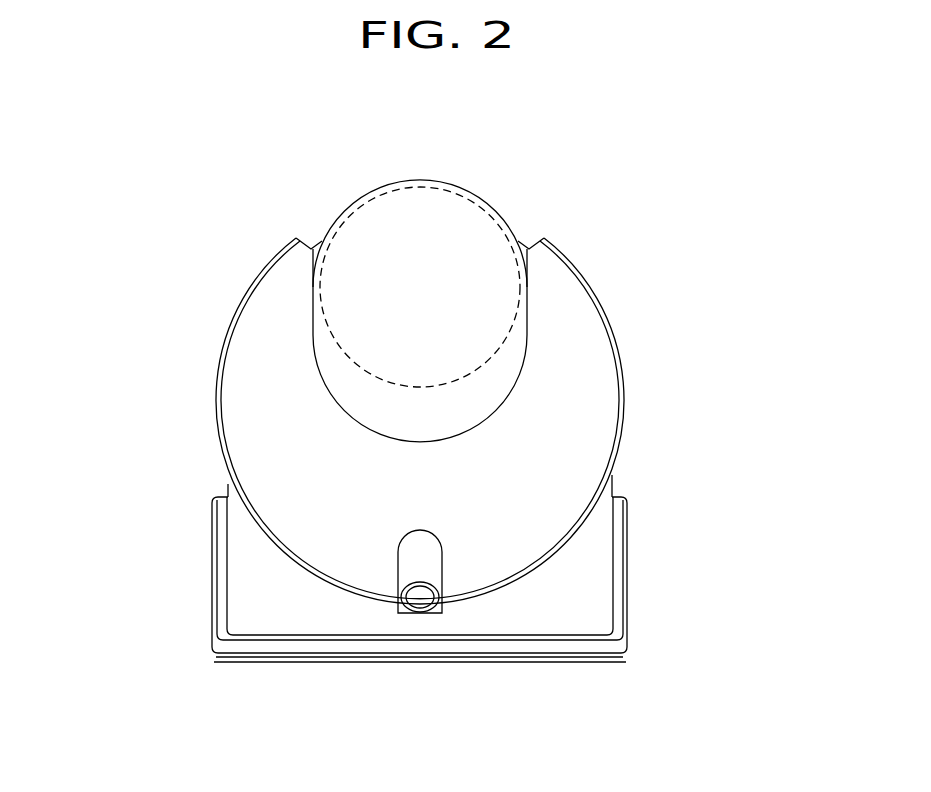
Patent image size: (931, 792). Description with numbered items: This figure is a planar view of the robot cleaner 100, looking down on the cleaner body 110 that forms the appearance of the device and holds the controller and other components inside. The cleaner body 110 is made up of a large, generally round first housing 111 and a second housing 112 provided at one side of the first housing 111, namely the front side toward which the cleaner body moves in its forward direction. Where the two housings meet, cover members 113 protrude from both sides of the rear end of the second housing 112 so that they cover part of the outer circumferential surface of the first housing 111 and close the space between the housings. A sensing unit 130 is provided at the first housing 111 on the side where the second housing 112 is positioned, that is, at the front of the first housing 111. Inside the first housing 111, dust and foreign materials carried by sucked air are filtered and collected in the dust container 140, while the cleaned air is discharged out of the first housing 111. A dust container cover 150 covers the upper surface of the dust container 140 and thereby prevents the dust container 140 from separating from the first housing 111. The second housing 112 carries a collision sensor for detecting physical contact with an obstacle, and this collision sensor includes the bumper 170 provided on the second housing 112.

The robot cleaner 100 is at (234, 163).
The cleaner body 110 is at (717, 375).
The first housing 111 is at (598, 390).
The second housing 112 is at (598, 554).
The cover member 113 is at (228, 486).
The sensing unit 130 is at (411, 562).
The dust container 140 is at (485, 210).
The dust container cover 150 is at (367, 193).
The bumper 170 is at (510, 662).